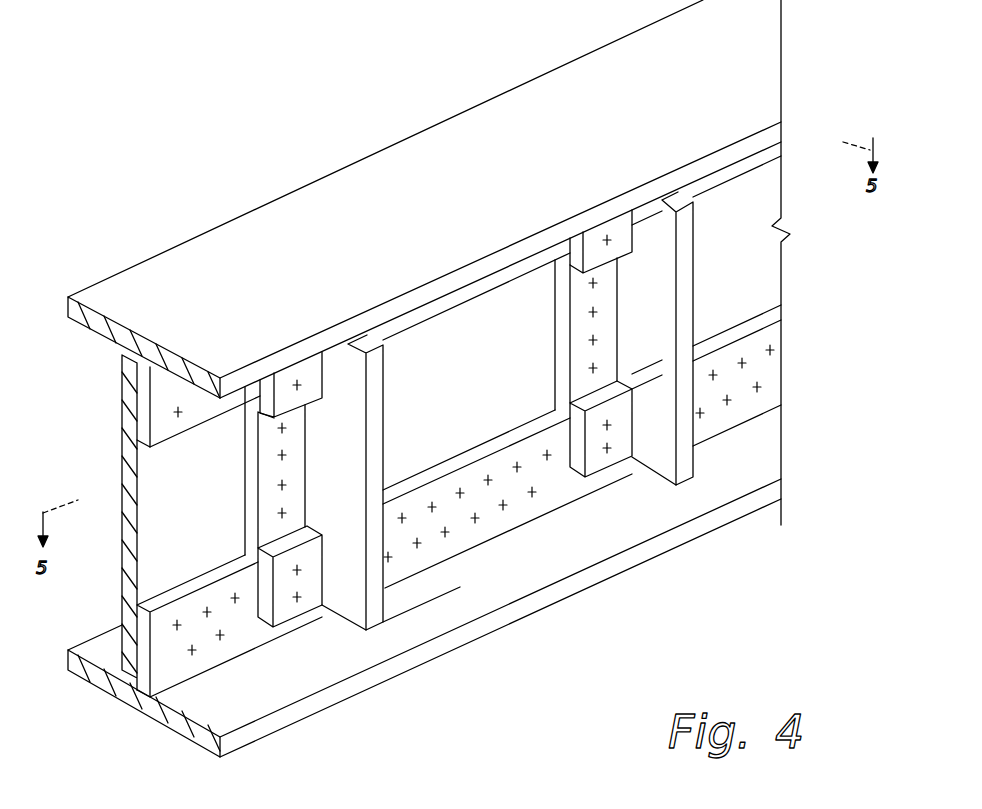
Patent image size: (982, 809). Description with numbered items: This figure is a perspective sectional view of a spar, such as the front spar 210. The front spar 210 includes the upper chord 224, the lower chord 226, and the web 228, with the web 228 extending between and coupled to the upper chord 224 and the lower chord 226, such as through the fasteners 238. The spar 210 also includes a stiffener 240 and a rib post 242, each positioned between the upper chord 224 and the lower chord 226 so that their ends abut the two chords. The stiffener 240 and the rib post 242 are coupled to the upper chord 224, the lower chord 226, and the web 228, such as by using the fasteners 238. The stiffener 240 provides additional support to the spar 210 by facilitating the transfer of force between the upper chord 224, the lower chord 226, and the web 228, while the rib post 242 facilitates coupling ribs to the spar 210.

The front spar 210 is at (417, 378).
The upper chord 224 is at (338, 180).
The lower chord 226 is at (482, 628).
The web 228 is at (122, 466).
The fasteners 238 is at (280, 456).
The stiffener 240 is at (385, 440).
The rib post 242 is at (694, 249).